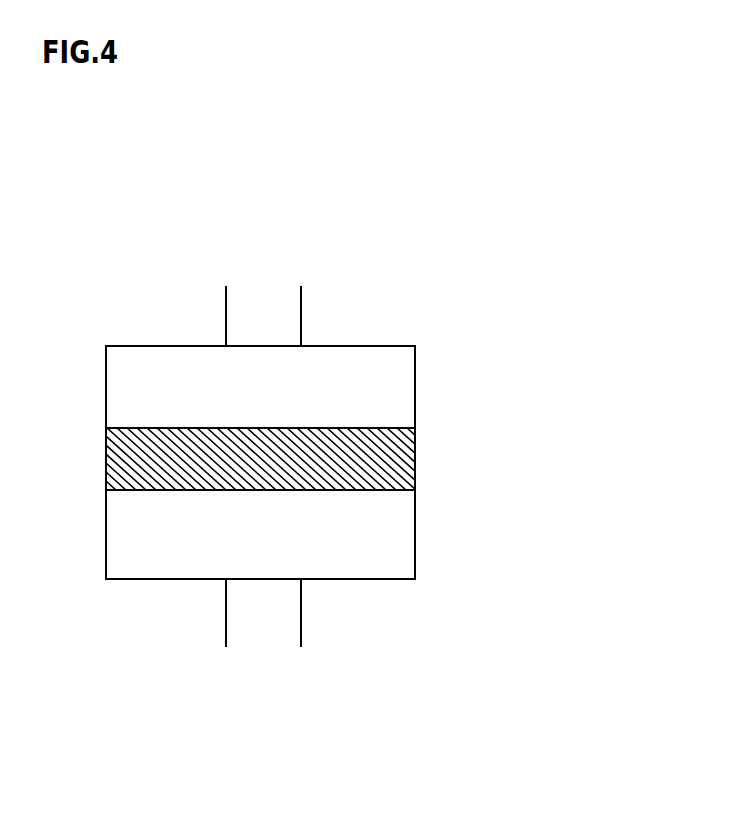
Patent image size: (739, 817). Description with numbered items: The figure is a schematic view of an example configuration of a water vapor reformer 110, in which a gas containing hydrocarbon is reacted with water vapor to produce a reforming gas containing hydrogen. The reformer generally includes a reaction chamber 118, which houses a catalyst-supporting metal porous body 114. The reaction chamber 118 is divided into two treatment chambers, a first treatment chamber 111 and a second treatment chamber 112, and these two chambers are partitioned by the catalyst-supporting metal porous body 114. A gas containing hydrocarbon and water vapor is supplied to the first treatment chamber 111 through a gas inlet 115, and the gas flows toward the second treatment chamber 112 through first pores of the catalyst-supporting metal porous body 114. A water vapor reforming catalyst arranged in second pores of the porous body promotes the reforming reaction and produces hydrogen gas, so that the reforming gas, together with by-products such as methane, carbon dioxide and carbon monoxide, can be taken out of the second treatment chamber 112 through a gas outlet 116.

The water vapor reformer 110 is at (382, 215).
The first treatment chamber 111 is at (398, 393).
The second treatment chamber 112 is at (319, 534).
The catalyst-supporting metal porous body 114 is at (397, 457).
The gas inlet 115 is at (262, 280).
The gas outlet 116 is at (261, 651).
The reaction chamber 118 is at (318, 462).